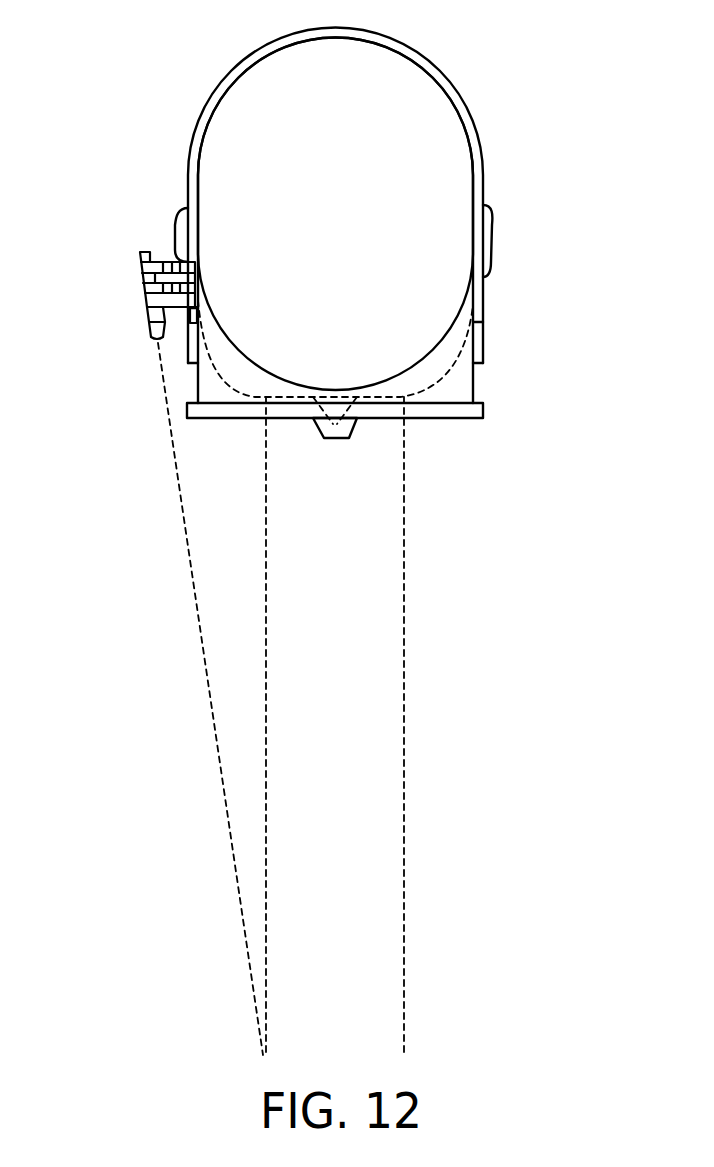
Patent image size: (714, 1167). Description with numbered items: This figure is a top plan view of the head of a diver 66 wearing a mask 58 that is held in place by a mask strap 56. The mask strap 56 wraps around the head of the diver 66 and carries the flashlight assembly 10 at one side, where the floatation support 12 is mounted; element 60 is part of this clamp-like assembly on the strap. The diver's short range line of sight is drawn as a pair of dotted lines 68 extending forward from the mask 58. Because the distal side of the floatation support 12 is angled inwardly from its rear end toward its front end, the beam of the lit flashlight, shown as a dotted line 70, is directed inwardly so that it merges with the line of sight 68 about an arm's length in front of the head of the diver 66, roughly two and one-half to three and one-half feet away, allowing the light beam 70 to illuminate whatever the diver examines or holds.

The clamp assembly 10 is at (107, 297).
The floatation support 12 is at (165, 258).
The mask strap 56 is at (478, 141).
The mask 58 is at (462, 386).
The jaw 60 is at (146, 338).
The head of a diver 66 is at (400, 110).
The short range line of sight 68 is at (475, 628).
The light beam 70 is at (198, 612).